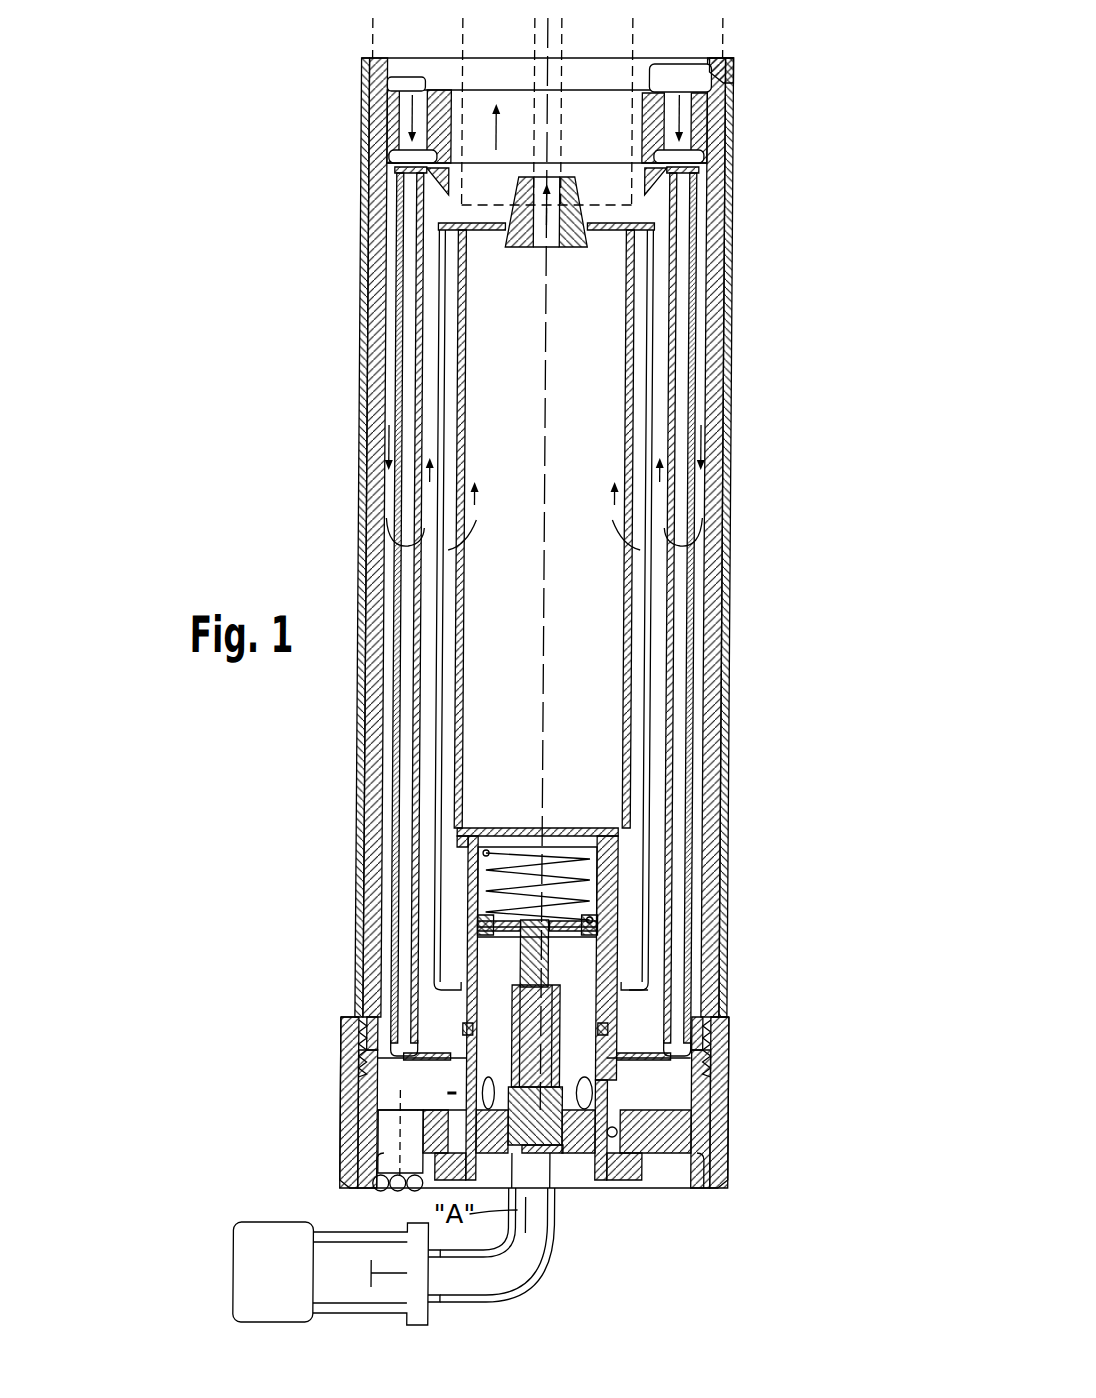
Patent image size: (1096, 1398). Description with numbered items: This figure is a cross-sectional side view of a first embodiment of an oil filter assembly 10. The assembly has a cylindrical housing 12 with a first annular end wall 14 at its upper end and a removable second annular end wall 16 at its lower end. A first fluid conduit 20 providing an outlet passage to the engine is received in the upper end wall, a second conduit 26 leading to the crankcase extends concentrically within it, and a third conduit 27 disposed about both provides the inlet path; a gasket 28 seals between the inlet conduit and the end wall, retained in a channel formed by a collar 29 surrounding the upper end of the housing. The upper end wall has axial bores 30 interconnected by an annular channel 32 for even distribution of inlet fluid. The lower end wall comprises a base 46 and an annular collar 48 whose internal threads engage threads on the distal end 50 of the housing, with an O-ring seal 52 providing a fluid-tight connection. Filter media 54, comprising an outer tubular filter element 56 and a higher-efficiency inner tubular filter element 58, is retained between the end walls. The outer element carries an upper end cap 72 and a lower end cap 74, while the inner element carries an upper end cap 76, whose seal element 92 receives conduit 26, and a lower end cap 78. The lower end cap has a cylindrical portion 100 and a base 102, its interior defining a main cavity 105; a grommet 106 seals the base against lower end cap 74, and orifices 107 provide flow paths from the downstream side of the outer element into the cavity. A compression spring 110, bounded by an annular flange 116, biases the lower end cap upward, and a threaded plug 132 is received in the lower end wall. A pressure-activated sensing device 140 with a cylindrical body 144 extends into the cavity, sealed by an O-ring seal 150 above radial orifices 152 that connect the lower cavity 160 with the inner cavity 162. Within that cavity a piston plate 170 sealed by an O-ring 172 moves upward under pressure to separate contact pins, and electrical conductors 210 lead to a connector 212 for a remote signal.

The filter assembly 10 is at (282, 132).
The housing 12 is at (384, 433).
The first annular end wall 14 is at (648, 90).
The second annular end wall 16 is at (722, 1090).
The first fluid conduit 20 is at (494, 104).
The second conduit 26 is at (558, 124).
The third conduit 27 is at (372, 40).
The gasket 28 is at (735, 72).
The collar 29 is at (364, 270).
The bores 30 is at (700, 136).
The annular channel 32 is at (422, 81).
The base 46 is at (694, 1160).
The annular collar 48 is at (714, 1062).
The distal end 50 is at (386, 1134).
The O-ring seal 52 is at (626, 1132).
The filter media 54 is at (694, 581).
The outer tubular filter element 56 is at (686, 663).
The inner tubular filter element 58 is at (630, 714).
The upper end cap 72 is at (700, 183).
The lower end cap 74 is at (612, 1030).
The upper end cap 76 is at (646, 219).
The lower end cap 78 is at (648, 964).
The seal element 92 is at (514, 250).
The cylindrical portion 100 is at (466, 926).
The base 102 is at (440, 1036).
The main cavity 105 is at (590, 830).
The grommet 106 is at (400, 1080).
The orifices 107 is at (580, 978).
The compression spring 110 is at (589, 1196).
The annular flange 116 is at (596, 1104).
The threaded plug 132 is at (390, 1184).
The pressure-activated sensing device 140 is at (624, 905).
The cylindrical body 144 is at (472, 956).
The O-ring seal 150 is at (605, 1030).
The radial orifices 152 is at (567, 1100).
The lower cavity 160 is at (440, 1112).
The inner cavity 162 is at (612, 1010).
The piston plate 170 is at (496, 862).
The O-ring 172 is at (487, 912).
The electrical conductors 210 is at (548, 1265).
The connector 212 is at (262, 1272).